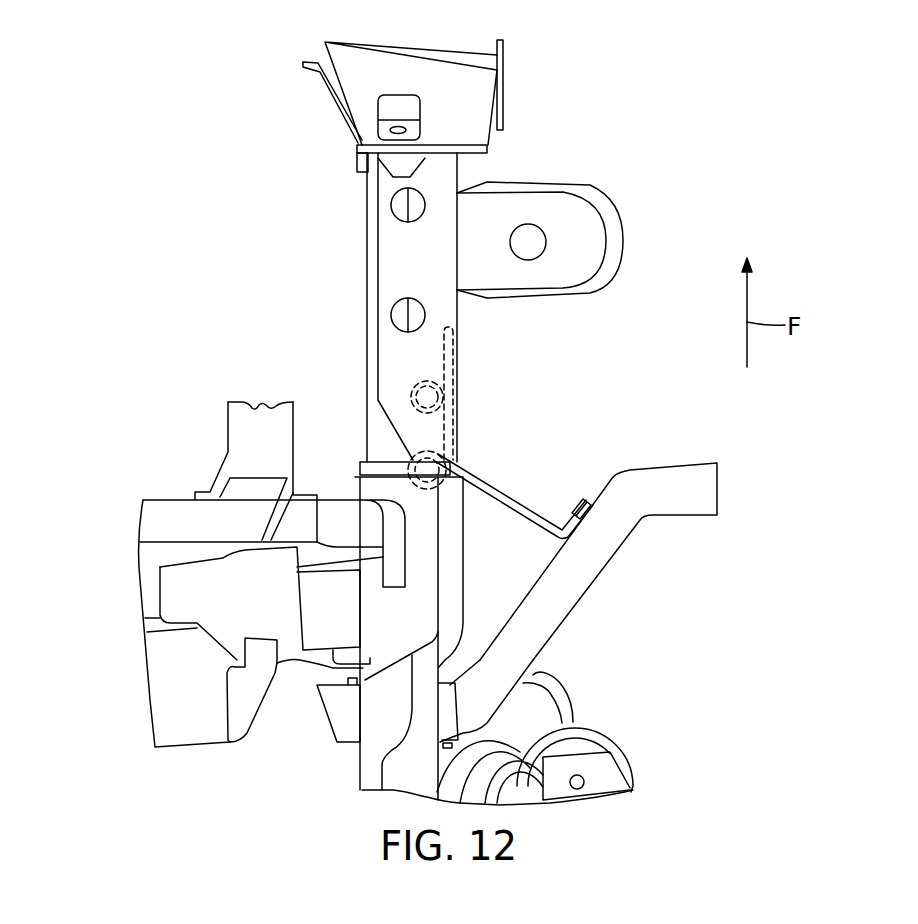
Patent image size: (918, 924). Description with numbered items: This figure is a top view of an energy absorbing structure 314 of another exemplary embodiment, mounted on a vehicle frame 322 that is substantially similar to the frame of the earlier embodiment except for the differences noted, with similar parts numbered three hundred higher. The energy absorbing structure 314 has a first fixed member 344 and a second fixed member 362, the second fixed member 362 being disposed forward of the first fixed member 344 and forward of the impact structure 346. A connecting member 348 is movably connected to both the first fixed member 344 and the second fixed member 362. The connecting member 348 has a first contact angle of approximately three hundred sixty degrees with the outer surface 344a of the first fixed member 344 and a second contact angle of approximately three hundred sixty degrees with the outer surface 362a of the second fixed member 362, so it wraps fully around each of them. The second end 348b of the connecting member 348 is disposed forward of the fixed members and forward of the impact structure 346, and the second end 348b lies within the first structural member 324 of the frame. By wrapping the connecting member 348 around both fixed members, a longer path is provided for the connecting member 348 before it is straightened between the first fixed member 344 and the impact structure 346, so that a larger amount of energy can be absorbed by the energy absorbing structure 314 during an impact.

The energy absorbing structure 314 is at (567, 622).
The vehicle frame 322 is at (165, 360).
The first structural member 324 is at (367, 248).
The first fixed member 344 is at (410, 458).
The outer surface 344a is at (418, 490).
The impact structure 346 is at (615, 555).
The connecting member 348 is at (520, 497).
The second end 348b is at (447, 327).
The second fixed member 362 is at (420, 399).
The outer surface 362a is at (420, 382).